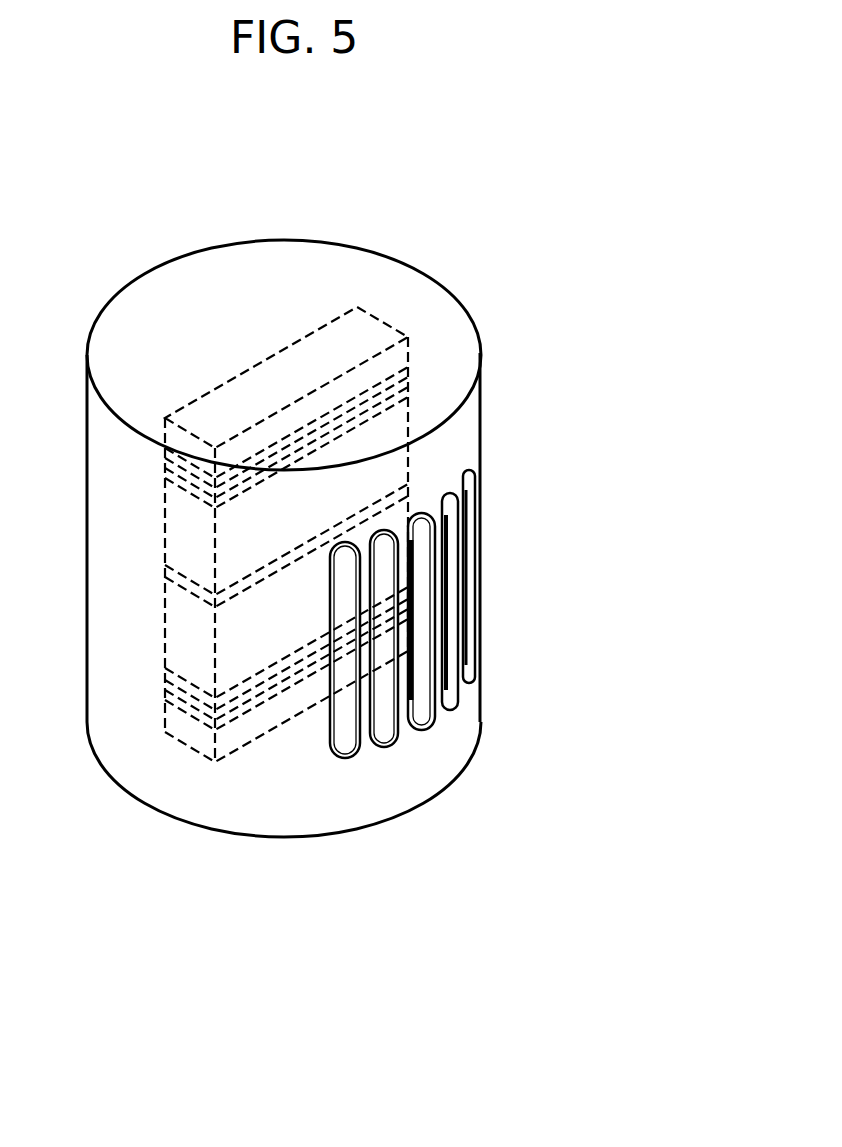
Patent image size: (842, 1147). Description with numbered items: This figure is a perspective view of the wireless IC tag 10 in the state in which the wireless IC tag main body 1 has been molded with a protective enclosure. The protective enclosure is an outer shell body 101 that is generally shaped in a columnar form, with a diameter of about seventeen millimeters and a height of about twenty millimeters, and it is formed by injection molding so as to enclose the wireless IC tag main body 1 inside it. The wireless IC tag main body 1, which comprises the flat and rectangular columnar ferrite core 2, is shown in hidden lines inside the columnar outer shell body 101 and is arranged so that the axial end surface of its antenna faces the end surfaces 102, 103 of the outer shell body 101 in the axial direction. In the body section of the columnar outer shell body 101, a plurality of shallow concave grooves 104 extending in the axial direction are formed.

The wireless IC tag 10 is at (540, 208).
The wireless IC tag main body 1 is at (358, 339).
The ferrite core 2 is at (387, 367).
The outer shell body 101 is at (460, 448).
The end surface 102 is at (203, 286).
The end surface 103 is at (215, 789).
The shallow concave grooves 104 is at (344, 744).